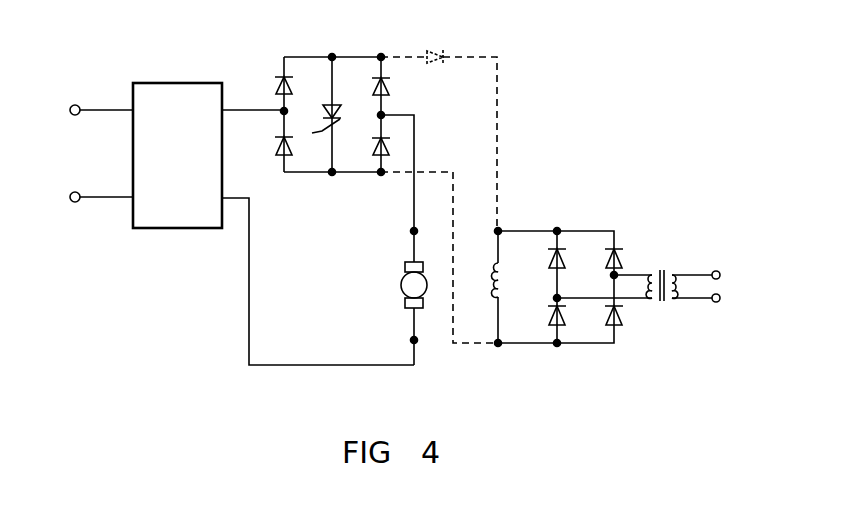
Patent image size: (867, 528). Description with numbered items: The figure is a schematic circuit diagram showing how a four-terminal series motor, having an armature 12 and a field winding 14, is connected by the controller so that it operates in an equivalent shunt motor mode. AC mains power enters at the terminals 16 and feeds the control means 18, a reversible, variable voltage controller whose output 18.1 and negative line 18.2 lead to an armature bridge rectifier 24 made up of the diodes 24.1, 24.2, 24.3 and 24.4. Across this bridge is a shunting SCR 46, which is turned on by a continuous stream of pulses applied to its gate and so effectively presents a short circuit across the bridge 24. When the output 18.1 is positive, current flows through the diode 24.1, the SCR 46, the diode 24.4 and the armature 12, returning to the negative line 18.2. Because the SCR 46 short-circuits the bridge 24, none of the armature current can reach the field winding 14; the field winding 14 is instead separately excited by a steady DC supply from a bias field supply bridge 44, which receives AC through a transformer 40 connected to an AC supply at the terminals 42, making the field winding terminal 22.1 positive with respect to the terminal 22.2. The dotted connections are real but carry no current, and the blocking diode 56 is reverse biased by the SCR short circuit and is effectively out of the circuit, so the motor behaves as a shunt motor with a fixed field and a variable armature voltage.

The armature 12 is at (401, 285).
The field winding 14 is at (491, 281).
The terminals 16 is at (75, 116).
The control means 18 is at (184, 169).
The output 18.1 is at (251, 113).
The negative line 18.2 is at (236, 200).
The field winding terminal 22.1 is at (500, 230).
The field winding terminal 22.2 is at (498, 346).
The armature bridge rectifier 24 is at (361, 113).
The diode 24.1 is at (279, 86).
The diode 24.2 is at (278, 148).
The diode 24.3 is at (390, 85).
The diode 24.4 is at (390, 143).
The transformer 40 is at (667, 266).
The terminals 42 is at (721, 300).
The bias field supply bridge 44 is at (583, 223).
The shunting SCR 46 is at (340, 112).
The blocking diode 56 is at (443, 49).